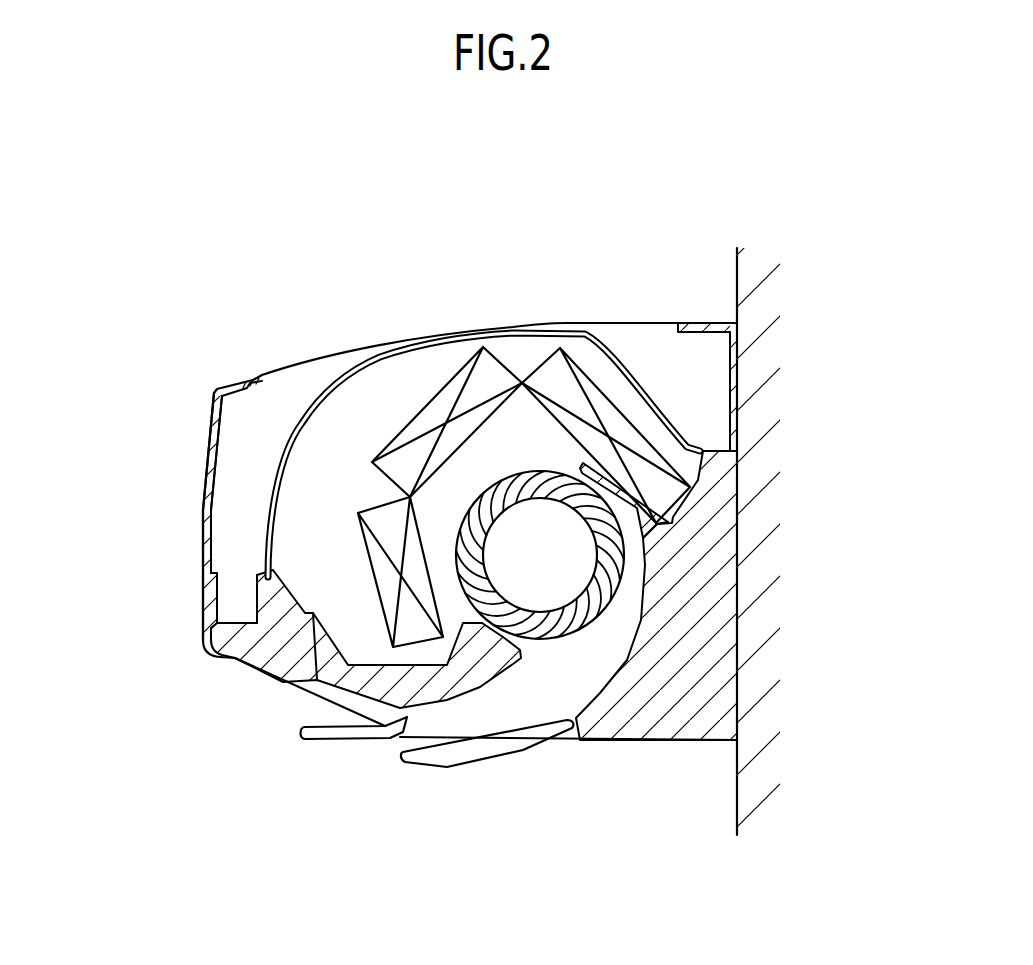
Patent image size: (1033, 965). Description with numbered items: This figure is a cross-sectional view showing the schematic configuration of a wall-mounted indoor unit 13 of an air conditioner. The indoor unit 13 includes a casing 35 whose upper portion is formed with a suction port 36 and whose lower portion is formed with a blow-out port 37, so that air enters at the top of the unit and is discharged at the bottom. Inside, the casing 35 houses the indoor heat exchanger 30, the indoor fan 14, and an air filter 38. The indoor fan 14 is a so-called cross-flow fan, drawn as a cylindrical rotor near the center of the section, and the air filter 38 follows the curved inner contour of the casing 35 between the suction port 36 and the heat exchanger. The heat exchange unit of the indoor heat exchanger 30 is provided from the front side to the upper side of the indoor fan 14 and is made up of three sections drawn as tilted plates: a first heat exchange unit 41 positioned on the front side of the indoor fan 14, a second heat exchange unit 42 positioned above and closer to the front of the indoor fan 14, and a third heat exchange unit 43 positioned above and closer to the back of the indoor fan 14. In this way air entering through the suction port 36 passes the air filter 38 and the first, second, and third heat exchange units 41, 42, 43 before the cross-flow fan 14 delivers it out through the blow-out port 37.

The indoor unit 13 is at (175, 402).
The indoor fan 14 is at (530, 472).
The indoor heat exchanger 30 is at (425, 404).
The casing 35 is at (205, 487).
The suction port 36 is at (259, 372).
The blow-out port 37 is at (399, 740).
The air filter 38 is at (331, 383).
The first heat exchange unit 41 is at (369, 560).
The second heat exchange unit 42 is at (392, 438).
The third heat exchange unit 43 is at (610, 398).